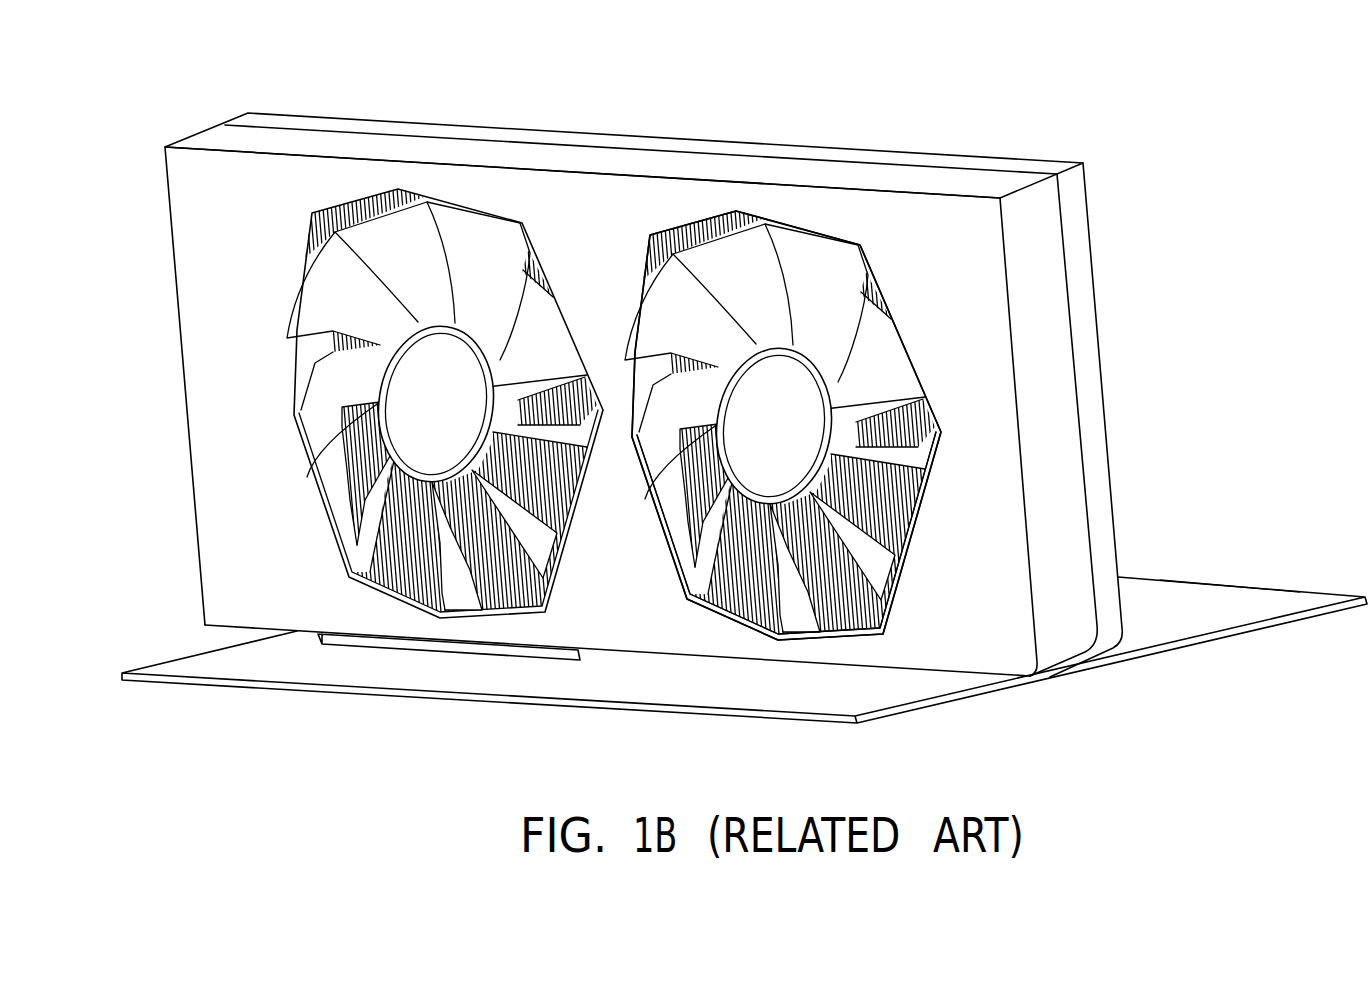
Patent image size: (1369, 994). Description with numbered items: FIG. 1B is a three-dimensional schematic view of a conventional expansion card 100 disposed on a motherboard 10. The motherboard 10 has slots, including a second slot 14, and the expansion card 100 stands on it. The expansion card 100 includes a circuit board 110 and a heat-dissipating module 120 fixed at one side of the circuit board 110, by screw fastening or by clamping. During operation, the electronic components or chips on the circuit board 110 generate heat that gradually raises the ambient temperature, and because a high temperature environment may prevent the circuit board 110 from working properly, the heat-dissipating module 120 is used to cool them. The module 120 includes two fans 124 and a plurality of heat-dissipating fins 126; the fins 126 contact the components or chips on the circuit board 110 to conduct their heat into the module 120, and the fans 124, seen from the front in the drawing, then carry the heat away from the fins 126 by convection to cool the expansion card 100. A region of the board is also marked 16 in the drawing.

The expansion card 100 is at (305, 92).
The circuit board 110 is at (1077, 218).
The heat-dissipating module 120 is at (1052, 187).
The fans 124 is at (427, 415).
The heat-dissipating fins 126 is at (843, 637).
The motherboard 10 is at (1208, 637).
The second slot 14 is at (443, 645).
The circuit board surface 16 is at (1216, 586).